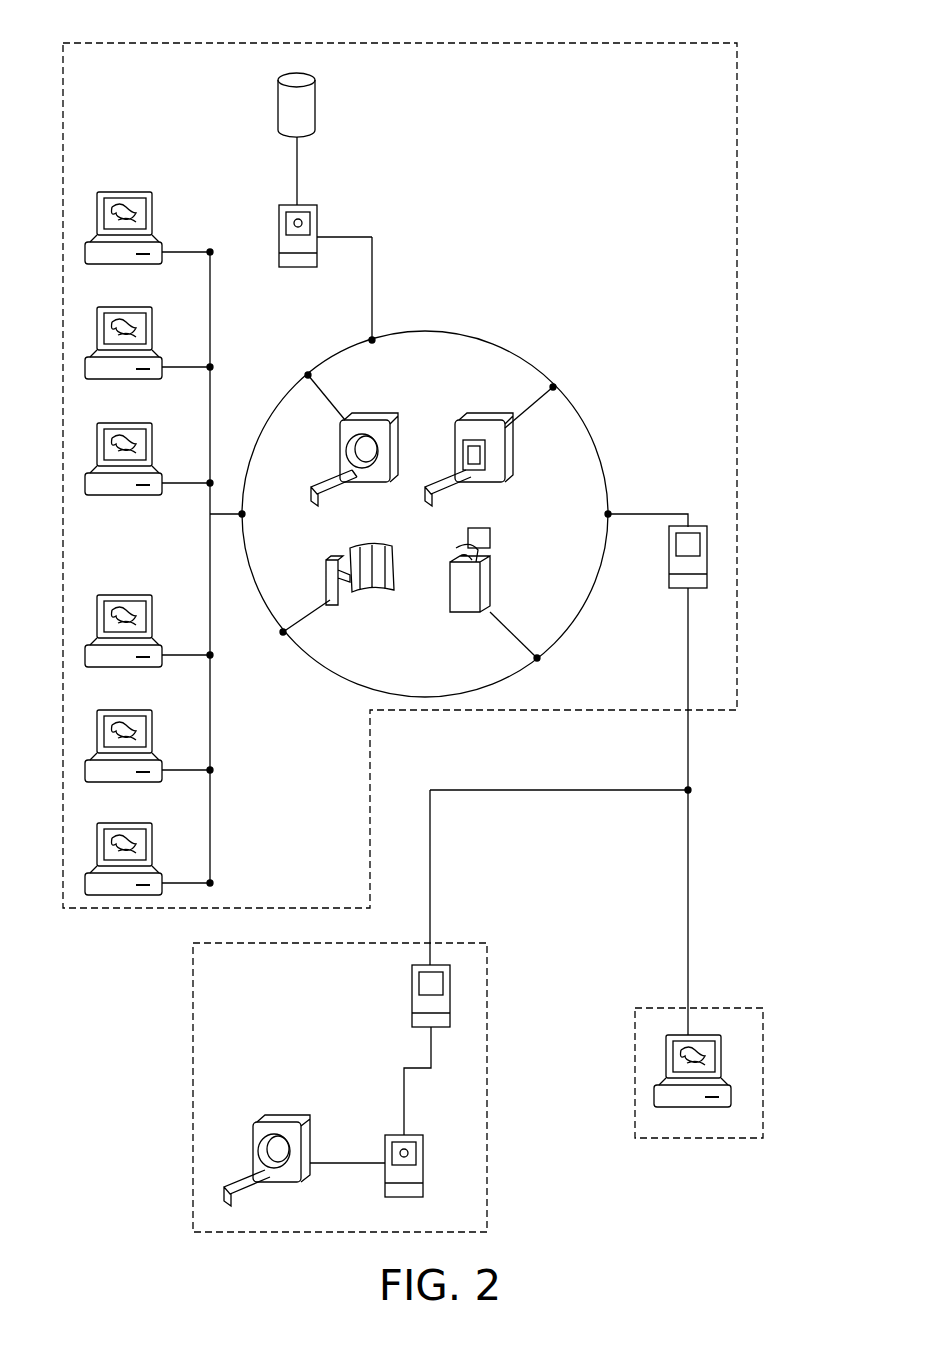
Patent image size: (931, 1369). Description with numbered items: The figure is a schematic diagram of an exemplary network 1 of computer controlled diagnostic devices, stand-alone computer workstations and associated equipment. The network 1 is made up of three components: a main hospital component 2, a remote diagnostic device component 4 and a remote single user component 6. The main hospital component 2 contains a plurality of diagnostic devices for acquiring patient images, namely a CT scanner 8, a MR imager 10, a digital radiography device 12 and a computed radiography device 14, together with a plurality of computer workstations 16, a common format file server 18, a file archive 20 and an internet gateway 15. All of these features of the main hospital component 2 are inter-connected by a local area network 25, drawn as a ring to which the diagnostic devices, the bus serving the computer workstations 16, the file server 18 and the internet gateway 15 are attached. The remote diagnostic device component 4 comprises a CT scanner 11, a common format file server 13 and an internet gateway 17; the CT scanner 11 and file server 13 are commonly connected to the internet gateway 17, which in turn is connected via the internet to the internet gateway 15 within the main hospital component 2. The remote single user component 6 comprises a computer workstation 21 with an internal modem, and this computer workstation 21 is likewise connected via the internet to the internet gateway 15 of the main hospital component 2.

The network 1 is at (779, 80).
The main hospital component 2 is at (675, 114).
The remote diagnostic device component 4 is at (240, 1054).
The remote single user component 6 is at (734, 1042).
The CT scanner 8 is at (384, 421).
The MR imager 10 is at (470, 424).
The CT scanner 11 is at (222, 1184).
The digital radiography (DR) device 12 is at (376, 600).
The common format file server 13 is at (423, 1157).
The computed radiography (CR) device 14 is at (490, 578).
The internet gateway 15 is at (708, 557).
The computer workstations 16 is at (122, 190).
The internet gateway 17 is at (450, 995).
The common format file server 18 is at (317, 215).
The file archive 20 is at (318, 103).
The computer workstation 21 is at (672, 1098).
The local area network (LAN) 25 is at (540, 360).